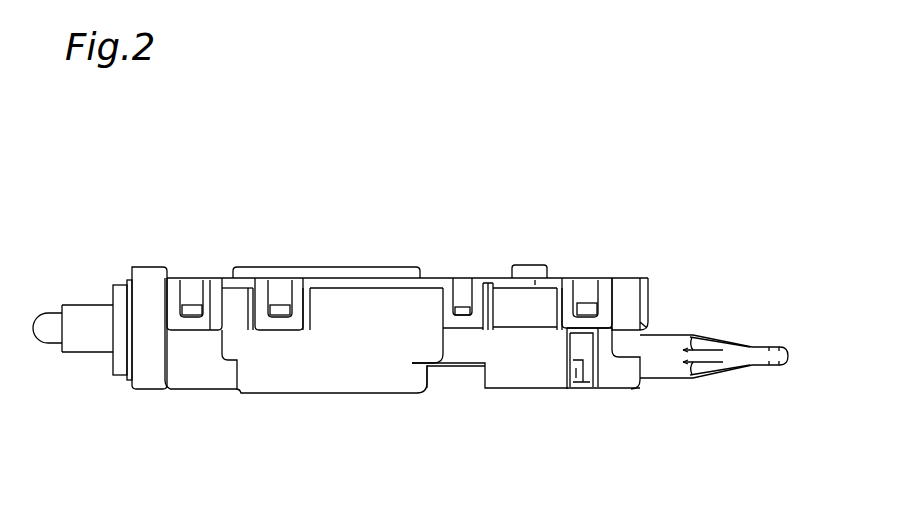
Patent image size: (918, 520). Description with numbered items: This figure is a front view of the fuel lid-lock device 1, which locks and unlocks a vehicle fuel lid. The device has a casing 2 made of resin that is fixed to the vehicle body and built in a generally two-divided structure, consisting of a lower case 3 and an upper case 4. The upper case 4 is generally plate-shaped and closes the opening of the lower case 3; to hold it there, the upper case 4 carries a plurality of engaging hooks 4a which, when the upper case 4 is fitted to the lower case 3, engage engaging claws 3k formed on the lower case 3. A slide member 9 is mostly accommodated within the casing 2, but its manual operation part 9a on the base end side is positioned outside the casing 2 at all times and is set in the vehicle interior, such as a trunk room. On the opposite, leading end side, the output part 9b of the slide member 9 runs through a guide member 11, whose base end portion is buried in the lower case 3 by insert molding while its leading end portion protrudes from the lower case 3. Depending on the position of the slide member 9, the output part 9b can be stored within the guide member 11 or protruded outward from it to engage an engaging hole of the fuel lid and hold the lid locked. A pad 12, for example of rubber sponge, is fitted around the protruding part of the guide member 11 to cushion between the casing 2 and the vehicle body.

The fuel lid-lock device 1 is at (711, 155).
The casing 2 is at (90, 185).
The lower case 3 is at (178, 340).
The engaging claws 3k is at (282, 292).
The upper case 4 is at (190, 283).
The engaging hooks 4a is at (190, 283).
The slide member 9 is at (678, 328).
The manual operation part 9a is at (763, 367).
The output part 9b is at (52, 337).
The guide member 11 is at (70, 296).
The pad 12 is at (120, 370).